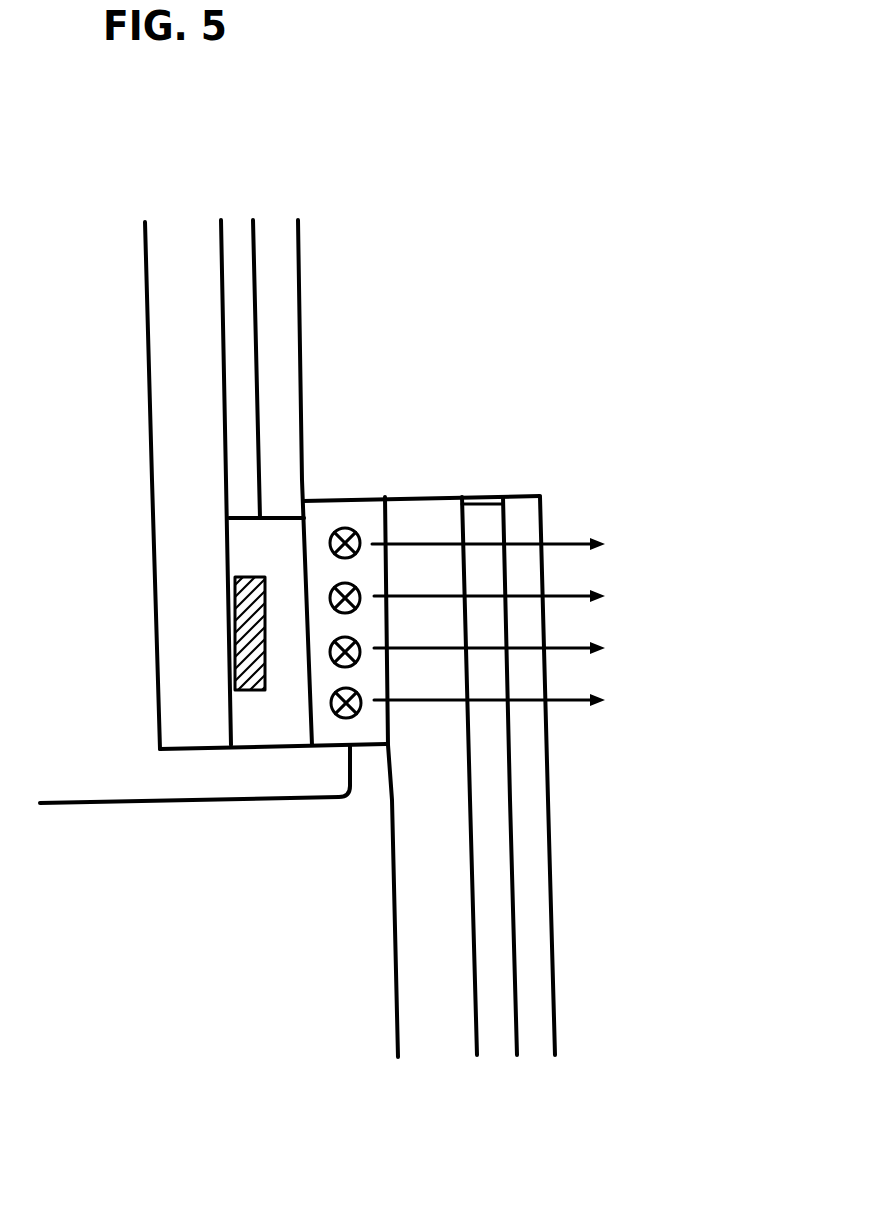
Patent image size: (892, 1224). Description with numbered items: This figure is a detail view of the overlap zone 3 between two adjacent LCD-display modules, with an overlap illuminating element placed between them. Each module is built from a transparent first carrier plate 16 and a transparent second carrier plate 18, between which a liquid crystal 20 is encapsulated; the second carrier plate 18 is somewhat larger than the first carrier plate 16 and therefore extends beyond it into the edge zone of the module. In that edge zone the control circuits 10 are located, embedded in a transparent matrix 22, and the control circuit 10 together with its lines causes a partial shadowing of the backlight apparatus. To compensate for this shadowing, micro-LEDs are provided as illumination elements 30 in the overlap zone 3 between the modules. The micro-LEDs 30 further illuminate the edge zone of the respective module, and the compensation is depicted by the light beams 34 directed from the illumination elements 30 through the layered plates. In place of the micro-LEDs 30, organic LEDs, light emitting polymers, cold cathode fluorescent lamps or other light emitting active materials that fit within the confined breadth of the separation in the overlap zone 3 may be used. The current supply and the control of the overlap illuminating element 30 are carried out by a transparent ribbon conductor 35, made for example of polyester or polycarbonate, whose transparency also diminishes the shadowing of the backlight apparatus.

The overlap zone 3 is at (620, 434).
The control circuits 10 is at (248, 642).
The first carrier plate 16 is at (280, 355).
The second carrier plate 18 is at (190, 416).
The liquid crystal 20 is at (238, 277).
The transparent matrix 22 is at (258, 550).
The illumination elements (micro-LEDs) 30 is at (354, 584).
The light beams 34 is at (539, 622).
The transparent ribbon conductor 35 is at (165, 800).